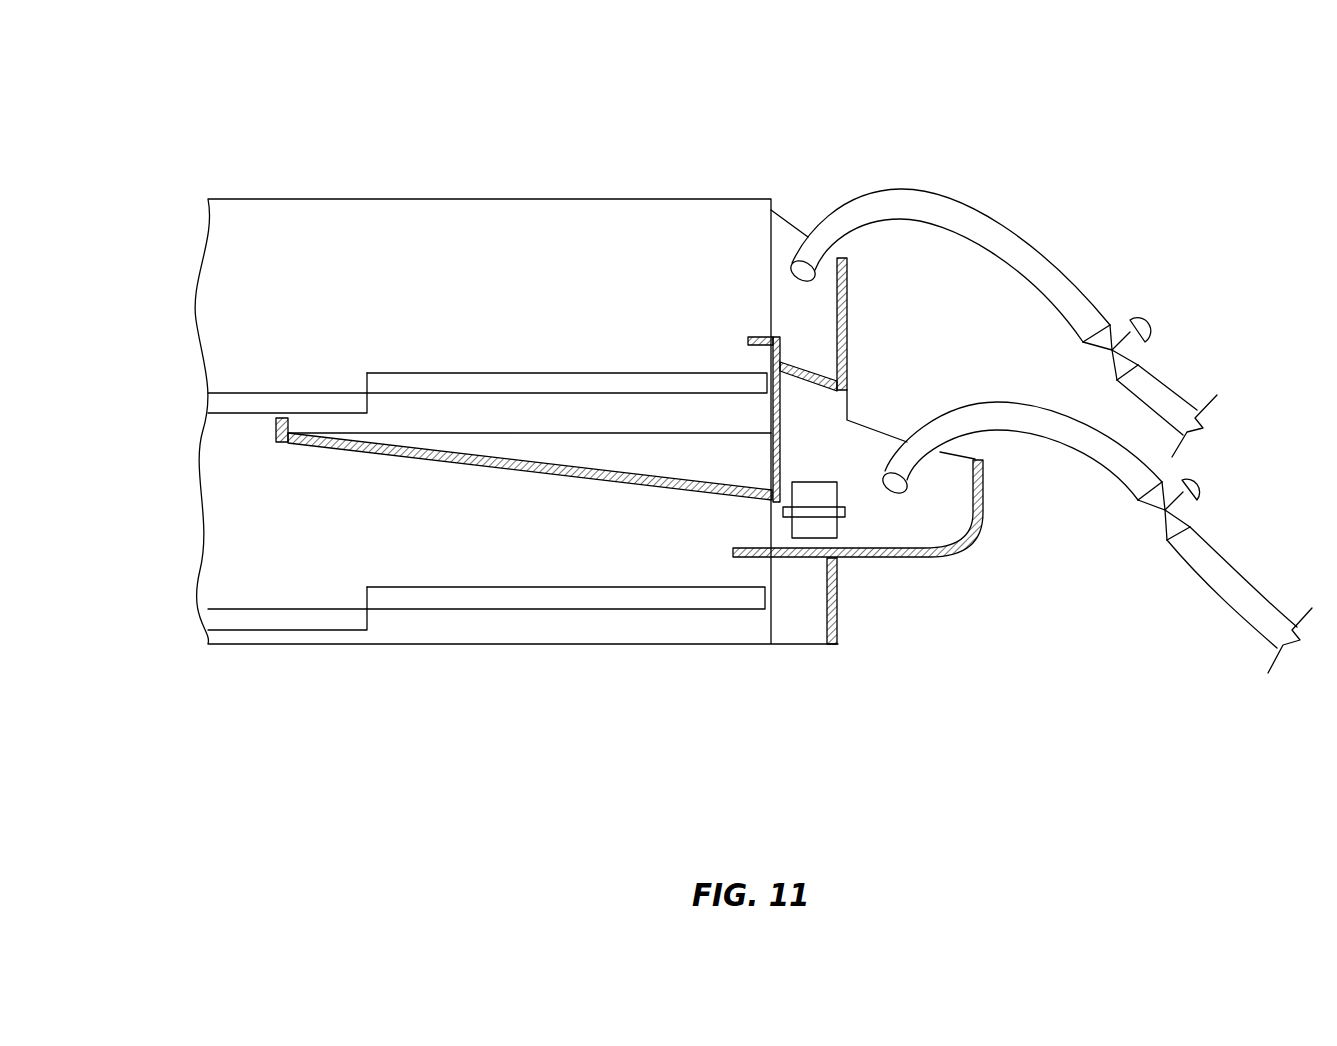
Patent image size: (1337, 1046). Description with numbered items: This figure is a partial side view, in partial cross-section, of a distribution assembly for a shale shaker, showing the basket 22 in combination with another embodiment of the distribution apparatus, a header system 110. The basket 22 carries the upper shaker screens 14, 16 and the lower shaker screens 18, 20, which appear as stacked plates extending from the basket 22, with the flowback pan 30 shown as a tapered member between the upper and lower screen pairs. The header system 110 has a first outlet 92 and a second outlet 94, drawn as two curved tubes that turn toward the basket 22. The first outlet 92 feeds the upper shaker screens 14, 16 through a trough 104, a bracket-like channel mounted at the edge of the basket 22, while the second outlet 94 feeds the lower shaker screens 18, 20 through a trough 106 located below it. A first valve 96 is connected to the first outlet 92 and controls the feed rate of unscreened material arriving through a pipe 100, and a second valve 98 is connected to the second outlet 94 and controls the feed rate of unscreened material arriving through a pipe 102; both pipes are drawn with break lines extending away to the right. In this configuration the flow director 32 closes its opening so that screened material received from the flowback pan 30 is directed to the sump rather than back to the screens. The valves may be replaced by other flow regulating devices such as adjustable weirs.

The upper shaker screen 14 is at (550, 370).
The upper shaker screen 16 is at (255, 392).
The lower shaker screen 18 is at (548, 585).
The lower shaker screen 20 is at (255, 608).
The basket 22 is at (465, 198).
The flowback pan 30 is at (630, 465).
The flow director 32 is at (808, 485).
The first outlet 92 is at (982, 203).
The second outlet 94 is at (1102, 465).
The first valve 96 is at (1150, 318).
The second valve 98 is at (1205, 480).
The pipe 100 is at (1170, 390).
The pipe 102 is at (1215, 600).
The trough 104 is at (788, 365).
The trough 106 is at (916, 541).
The header system 110 is at (892, 97).